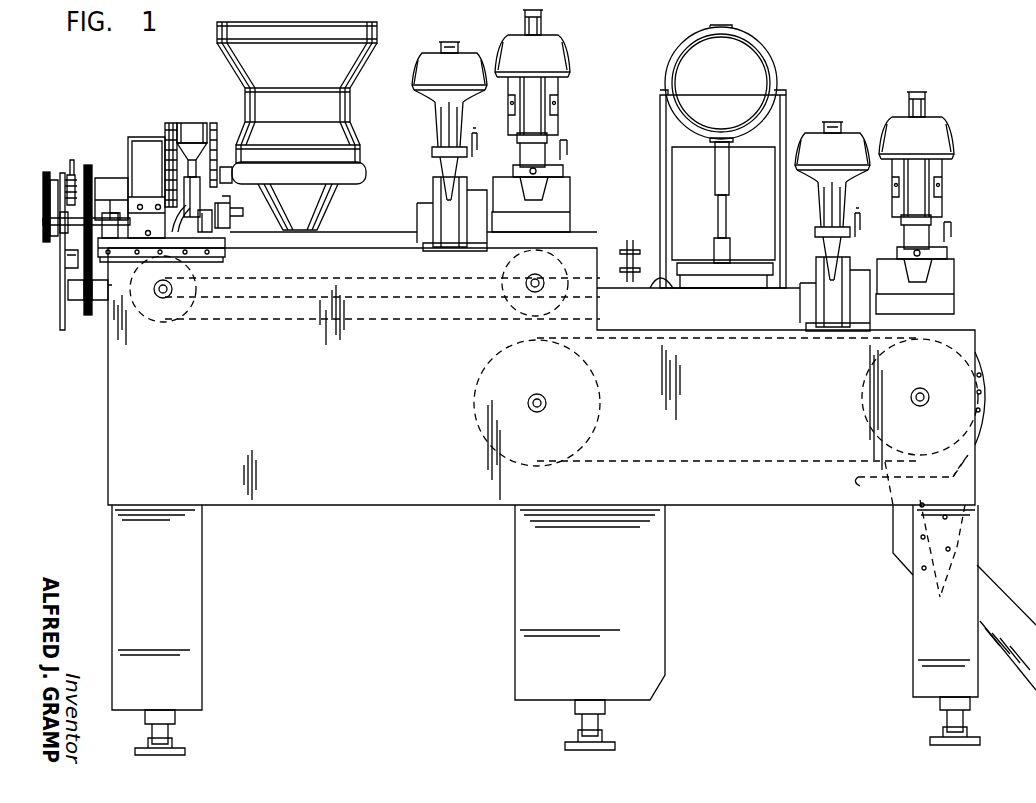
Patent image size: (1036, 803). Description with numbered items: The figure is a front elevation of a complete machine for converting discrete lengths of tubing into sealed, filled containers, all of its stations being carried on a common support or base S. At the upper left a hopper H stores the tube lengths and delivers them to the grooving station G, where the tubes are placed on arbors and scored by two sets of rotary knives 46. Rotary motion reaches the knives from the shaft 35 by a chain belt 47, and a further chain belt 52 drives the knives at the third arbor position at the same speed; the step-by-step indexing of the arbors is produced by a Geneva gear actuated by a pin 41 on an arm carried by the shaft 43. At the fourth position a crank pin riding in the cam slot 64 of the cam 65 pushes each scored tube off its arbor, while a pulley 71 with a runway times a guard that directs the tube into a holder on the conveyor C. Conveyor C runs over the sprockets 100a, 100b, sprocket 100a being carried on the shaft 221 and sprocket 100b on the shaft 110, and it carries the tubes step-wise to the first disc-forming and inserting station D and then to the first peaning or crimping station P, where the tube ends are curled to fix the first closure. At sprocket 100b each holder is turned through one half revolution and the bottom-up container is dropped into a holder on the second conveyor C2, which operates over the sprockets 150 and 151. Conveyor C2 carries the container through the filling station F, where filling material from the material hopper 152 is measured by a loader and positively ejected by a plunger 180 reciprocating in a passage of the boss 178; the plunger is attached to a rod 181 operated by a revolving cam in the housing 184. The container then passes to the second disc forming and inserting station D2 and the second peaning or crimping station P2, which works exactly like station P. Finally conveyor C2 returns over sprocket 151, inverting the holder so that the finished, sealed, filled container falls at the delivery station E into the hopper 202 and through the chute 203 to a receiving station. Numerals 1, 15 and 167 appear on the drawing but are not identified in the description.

The hopper body 1 is at (366, 60).
The hopper lower section 15 is at (358, 140).
The hopper H is at (378, 34).
The grooving station G is at (150, 135).
The chain belt 52 is at (170, 123).
The rotary knives 46 is at (188, 123).
The chain belt 47 is at (72, 176).
The shaft 35 is at (46, 196).
The cam 65 is at (44, 224).
The pin 41 is at (70, 262).
The shaft 43 is at (58, 294).
The bracket 167 is at (236, 228).
The pulley 71 is at (232, 228).
The cam slot 64 is at (196, 258).
The shaft 221 is at (172, 290).
The sprocket 100a is at (152, 318).
The sprocket 100b is at (560, 310).
The shaft 110 is at (530, 286).
The conveyor C is at (305, 322).
The second conveyor C2 is at (698, 466).
The sprocket 150 is at (600, 419).
The sprocket 151 is at (860, 408).
The first disc-forming and inserting station D is at (440, 134).
The first peaning or crimping station P is at (560, 176).
The second disc forming and inserting station D2 is at (837, 208).
The second peaning or crimping station P2 is at (931, 203).
The housing 184 is at (765, 48).
The filling station F is at (788, 104).
The material hopper 152 is at (680, 200).
The rod 181 is at (718, 180).
The plunger 180 is at (723, 224).
The boss 178 is at (730, 250).
The hopper 202 is at (972, 460).
The chute 203 is at (1028, 612).
The delivery station E is at (965, 481).
The support or base S is at (410, 505).